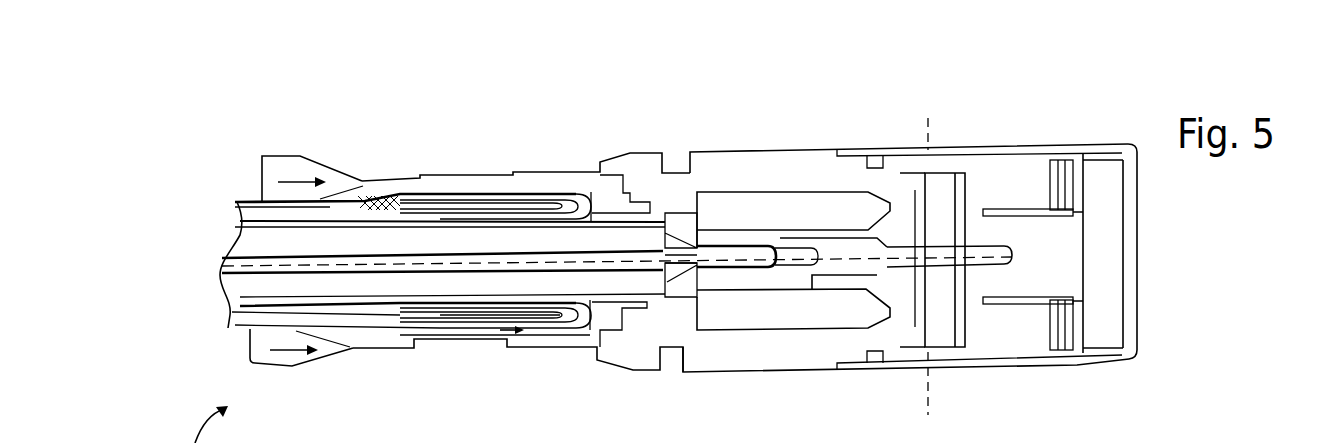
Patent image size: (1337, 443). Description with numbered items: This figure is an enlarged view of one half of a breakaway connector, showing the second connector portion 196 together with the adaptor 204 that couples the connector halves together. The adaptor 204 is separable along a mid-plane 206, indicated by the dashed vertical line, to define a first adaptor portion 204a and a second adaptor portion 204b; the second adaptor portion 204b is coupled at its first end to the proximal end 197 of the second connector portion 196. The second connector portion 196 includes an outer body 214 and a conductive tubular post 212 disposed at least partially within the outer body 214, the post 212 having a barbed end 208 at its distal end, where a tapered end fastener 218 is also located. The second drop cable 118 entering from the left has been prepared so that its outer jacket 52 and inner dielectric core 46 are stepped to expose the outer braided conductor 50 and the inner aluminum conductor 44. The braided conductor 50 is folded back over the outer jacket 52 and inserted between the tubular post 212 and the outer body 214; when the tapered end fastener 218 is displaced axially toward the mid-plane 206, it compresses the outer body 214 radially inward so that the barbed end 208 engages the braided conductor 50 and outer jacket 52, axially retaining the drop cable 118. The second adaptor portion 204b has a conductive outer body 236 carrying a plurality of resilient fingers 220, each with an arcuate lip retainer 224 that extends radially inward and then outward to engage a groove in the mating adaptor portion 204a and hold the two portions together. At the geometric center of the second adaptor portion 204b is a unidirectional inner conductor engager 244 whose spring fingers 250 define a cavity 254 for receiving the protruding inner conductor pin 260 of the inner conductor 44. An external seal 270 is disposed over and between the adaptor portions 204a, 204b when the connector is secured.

The second drop cable 118 is at (238, 204).
The tapered end fastener 218 is at (300, 156).
The inner dielectric core 46 is at (298, 290).
The outer body 214 is at (460, 185).
The conductive tubular post 212 is at (620, 302).
The barbed end 208 is at (362, 226).
The outer braided conductor 50 is at (540, 190).
The outer jacket 52 is at (470, 317).
The inner aluminum conductor 44 is at (357, 290).
The unidirectional inner conductor engager 244 is at (779, 276).
The protruding inner conductor pin 260 is at (757, 244).
The cavity 254 is at (795, 266).
The spring fingers 250 is at (683, 286).
The mid-plane 206 is at (930, 110).
The first adaptor portion 204a is at (873, 280).
The second adaptor portion 204b is at (783, 152).
The conductive outer body 236 is at (745, 155).
The resilient fingers 220 is at (1020, 178).
The arcuate lip retainer 224 is at (1050, 175).
The external seal 270 is at (1111, 150).
The adaptor 204 is at (1048, 272).
The second connector portion 196 is at (607, 138).
The proximal end 197 is at (622, 131).